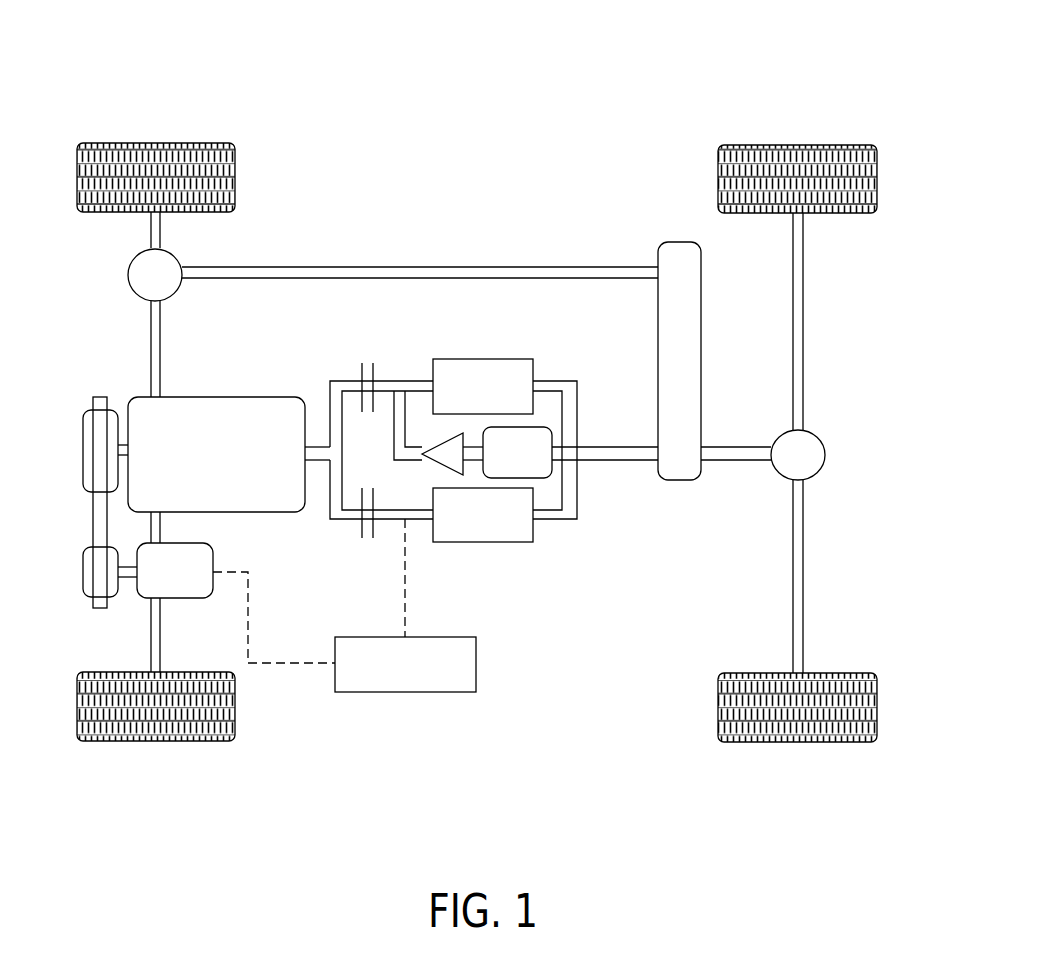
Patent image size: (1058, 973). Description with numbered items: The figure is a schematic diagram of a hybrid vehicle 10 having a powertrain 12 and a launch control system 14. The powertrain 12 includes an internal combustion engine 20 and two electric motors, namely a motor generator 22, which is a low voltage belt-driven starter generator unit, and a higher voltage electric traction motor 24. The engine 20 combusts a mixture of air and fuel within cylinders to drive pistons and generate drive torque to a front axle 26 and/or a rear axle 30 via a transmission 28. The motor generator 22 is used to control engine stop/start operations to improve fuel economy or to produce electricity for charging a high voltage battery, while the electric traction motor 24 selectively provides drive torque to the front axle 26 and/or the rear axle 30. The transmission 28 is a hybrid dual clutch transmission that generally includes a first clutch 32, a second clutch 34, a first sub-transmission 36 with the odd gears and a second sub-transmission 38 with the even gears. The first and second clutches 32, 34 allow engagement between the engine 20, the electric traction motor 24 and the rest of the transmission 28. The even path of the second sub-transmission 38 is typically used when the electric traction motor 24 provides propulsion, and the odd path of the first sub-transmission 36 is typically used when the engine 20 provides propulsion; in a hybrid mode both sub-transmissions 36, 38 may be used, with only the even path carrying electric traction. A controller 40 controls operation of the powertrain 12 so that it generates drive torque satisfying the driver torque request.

The vehicle 10 is at (476, 418).
The powertrain 12 is at (322, 247).
The launch control system 14 is at (376, 559).
The internal combustion engine 20 is at (220, 396).
The motor generator 22 is at (175, 570).
The electric traction motor 24 is at (552, 470).
The front axle 26 is at (146, 230).
The transmission 28 is at (478, 502).
The rear axle 30 is at (807, 353).
The first clutch 32 is at (353, 534).
The second clutch 34 is at (349, 372).
The first sub-transmission 36 is at (533, 535).
The second sub-transmission 38 is at (533, 362).
The controller 40 is at (476, 663).